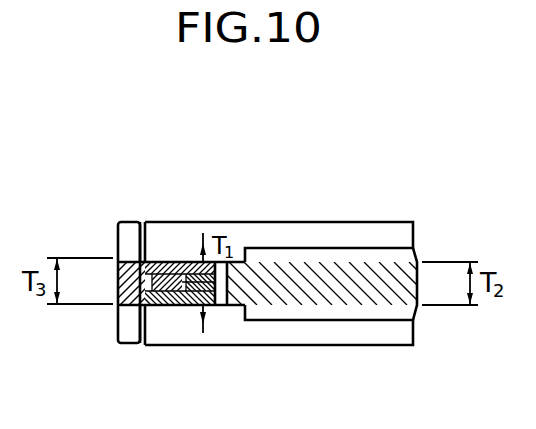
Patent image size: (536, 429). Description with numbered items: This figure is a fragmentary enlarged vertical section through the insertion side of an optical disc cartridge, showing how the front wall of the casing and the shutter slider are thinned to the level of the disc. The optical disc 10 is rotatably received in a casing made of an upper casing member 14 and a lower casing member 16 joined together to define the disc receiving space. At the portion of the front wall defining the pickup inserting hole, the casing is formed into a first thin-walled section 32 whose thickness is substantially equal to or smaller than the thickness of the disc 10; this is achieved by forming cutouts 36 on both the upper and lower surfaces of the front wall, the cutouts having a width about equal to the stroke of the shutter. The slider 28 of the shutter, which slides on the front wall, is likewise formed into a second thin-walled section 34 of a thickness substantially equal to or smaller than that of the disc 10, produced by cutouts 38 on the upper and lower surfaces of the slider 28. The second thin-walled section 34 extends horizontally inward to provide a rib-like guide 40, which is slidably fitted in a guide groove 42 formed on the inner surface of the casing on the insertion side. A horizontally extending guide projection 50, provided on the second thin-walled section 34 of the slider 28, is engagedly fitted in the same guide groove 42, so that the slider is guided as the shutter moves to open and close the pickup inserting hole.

The optical disc 10 is at (309, 300).
The upper casing member 14 is at (357, 222).
The lower casing member 16 is at (361, 346).
The slider 28 is at (120, 343).
The first thin-walled section 32 is at (160, 263).
The second thin-walled section 34 is at (117, 268).
The cutouts 36 is at (195, 230).
The cutouts 38 is at (128, 245).
The rib-like guide 40 is at (185, 306).
The guide groove 42 is at (176, 262).
The guide projection 50 is at (163, 306).